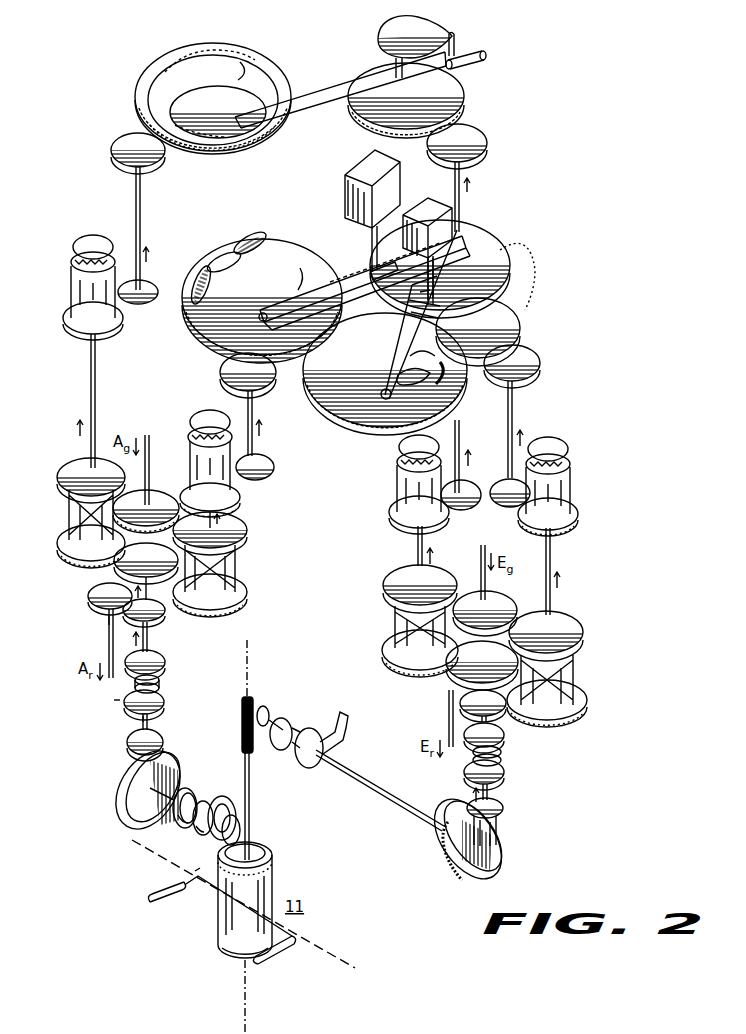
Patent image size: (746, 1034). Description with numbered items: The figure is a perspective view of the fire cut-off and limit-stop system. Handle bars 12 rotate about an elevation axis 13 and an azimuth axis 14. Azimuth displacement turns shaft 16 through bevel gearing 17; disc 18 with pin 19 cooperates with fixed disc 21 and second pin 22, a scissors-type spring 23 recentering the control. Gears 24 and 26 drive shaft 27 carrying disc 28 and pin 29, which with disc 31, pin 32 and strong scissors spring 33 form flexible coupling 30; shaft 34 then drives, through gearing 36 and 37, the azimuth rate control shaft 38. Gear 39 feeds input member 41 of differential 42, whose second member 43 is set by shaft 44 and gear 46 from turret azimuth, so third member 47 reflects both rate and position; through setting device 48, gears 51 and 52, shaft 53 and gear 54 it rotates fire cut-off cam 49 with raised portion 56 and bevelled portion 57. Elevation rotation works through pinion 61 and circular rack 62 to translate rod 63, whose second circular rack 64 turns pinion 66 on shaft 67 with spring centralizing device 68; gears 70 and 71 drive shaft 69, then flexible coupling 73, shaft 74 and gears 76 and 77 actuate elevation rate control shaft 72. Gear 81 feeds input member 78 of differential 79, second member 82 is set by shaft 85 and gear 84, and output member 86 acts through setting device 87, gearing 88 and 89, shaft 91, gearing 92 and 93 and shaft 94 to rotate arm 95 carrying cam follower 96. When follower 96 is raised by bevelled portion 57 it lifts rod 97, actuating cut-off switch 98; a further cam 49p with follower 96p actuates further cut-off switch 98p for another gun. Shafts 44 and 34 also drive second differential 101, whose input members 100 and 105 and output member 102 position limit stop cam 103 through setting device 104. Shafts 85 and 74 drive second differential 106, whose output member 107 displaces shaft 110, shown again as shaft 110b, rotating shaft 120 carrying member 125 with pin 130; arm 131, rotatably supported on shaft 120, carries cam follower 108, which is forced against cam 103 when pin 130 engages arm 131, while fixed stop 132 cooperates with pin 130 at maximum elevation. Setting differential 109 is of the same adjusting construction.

The limit stop cam 103 is at (206, 58).
The cam follower 108 is at (275, 130).
The arm 131 is at (320, 72).
The member 125 is at (394, 29).
The pin 130 is at (458, 42).
The fixed stop 132 is at (484, 58).
The shaft 120 is at (456, 95).
The shaft 110 is at (462, 190).
The cut-off switch 98 is at (372, 160).
The further cut-off switch 98p is at (440, 188).
The rod 97 is at (372, 240).
The fire cut-off cam 49 is at (188, 318).
The cam follower 96 is at (204, 339).
The bevelled portion 57 is at (262, 242).
The raised portion 56 is at (222, 247).
The arm 95 is at (300, 270).
The gear 54 is at (220, 368).
The shaft 53 is at (253, 404).
The gear 52 is at (262, 458).
The setting device 48 is at (242, 484).
The gear 51 is at (240, 501).
The second member of differential 43 is at (242, 530).
The third member of differential 47 is at (238, 552).
The differential 42 is at (244, 574).
The input member of differential 41 is at (246, 591).
The setting device 104 is at (72, 292).
The output member 102 is at (90, 414).
The input member 100 is at (70, 468).
The second differential 101 is at (68, 518).
The input member 105 is at (68, 550).
The shaft 44 is at (150, 432).
The gear 46 is at (160, 496).
The gear 39 is at (112, 568).
The gearing 37 is at (88, 600).
The azimuth rate control shaft 38 is at (104, 648).
The gearing 36 is at (109, 625).
The shaft 34 is at (164, 624).
The disc 31 is at (162, 651).
The pin 32 is at (162, 662).
The scissors spring 33 is at (135, 688).
The pin 29 is at (160, 690).
The flexible coupling 30 is at (114, 703).
The disc 28 is at (126, 702).
The shaft 27 is at (140, 722).
The gear 26 is at (154, 722).
The gear 24 is at (160, 742).
The shaft 16 is at (156, 812).
The disc 18 is at (188, 792).
The pin 19 is at (204, 801).
The fixed disc 21 is at (220, 797).
The second pin 22 is at (178, 818).
The scissors-type spring 23 is at (194, 830).
The bevel gearing 17 is at (220, 840).
The second circular rack 64 is at (252, 698).
The rod 63 is at (250, 808).
The pinion 66 is at (268, 708).
The spring centralizing device 68 is at (309, 727).
The shaft 67 is at (346, 772).
The circular rack 62 is at (272, 874).
The pinion 61 is at (228, 950).
The handle bars 12 is at (178, 896).
The elevation axis 13 is at (357, 968).
The azimuth axis 14 is at (248, 1012).
The shaft 94 is at (498, 293).
The gearing 93 is at (523, 336).
The gearing 92 is at (534, 356).
The shaft 91 is at (516, 416).
The further cam 49p is at (334, 420).
The follower 96p is at (356, 434).
The setting differential 109 is at (395, 492).
The shaft 110b is at (460, 442).
The output member 107 is at (416, 558).
The second differential 106 is at (384, 614).
The setting device 87 is at (572, 490).
The gearing 88 is at (580, 510).
The gearing 89 is at (508, 504).
The output member 86 is at (556, 591).
The shaft 85 is at (478, 574).
The gear 84 is at (504, 604).
The second member of differential 82 is at (578, 626).
The differential 79 is at (582, 670).
The input member of differential 78 is at (572, 718).
The gear 81 is at (445, 668).
The gear 77 is at (459, 696).
The gear 76 is at (470, 712).
The elevation rate control shaft 72 is at (448, 722).
The shaft 74 is at (504, 735).
The flexible coupling 73 is at (502, 768).
The shaft 69 is at (496, 794).
The gear 71 is at (501, 822).
The gear 70 is at (436, 866).